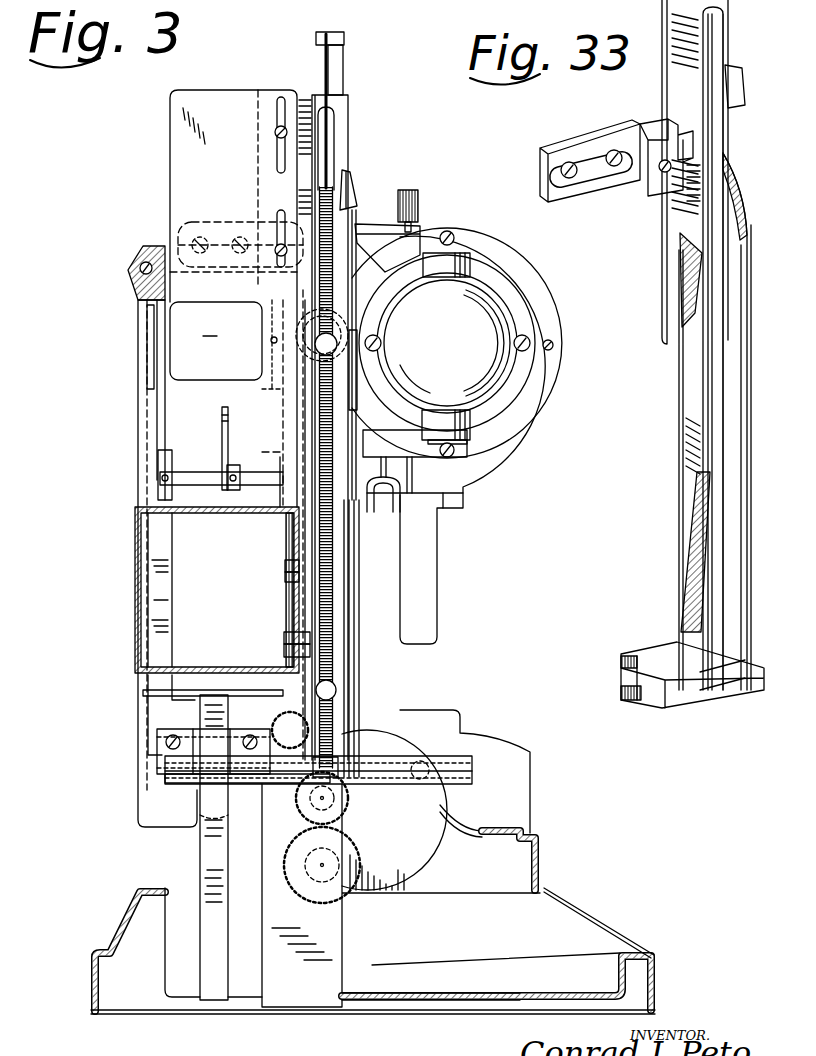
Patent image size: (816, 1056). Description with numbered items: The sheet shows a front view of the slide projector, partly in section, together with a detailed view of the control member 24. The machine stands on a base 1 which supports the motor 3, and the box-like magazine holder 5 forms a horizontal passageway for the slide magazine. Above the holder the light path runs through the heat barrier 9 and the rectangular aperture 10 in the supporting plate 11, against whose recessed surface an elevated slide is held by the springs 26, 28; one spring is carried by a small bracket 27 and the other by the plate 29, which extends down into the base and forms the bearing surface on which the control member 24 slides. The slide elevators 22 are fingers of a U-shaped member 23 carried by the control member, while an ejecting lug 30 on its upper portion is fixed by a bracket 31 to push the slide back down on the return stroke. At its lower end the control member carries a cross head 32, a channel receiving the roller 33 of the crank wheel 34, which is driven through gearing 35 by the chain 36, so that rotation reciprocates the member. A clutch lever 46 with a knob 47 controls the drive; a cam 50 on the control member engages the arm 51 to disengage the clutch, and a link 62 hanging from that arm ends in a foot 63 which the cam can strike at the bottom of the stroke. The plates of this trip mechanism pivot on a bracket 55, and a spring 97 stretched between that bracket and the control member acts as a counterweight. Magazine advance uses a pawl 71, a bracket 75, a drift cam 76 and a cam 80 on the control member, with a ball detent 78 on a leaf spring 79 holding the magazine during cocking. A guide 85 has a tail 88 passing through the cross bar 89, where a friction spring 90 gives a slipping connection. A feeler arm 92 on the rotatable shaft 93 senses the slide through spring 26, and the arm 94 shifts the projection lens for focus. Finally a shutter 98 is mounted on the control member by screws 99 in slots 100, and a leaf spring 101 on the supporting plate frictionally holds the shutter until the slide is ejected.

In FIG. 3, the base 1 is at (92, 967).
In FIG. 3, the motor 3 is at (548, 300).
In FIG. 3, the magazine holder 5 is at (137, 550).
In FIG. 3, the heat barrier 9 is at (210, 326).
In FIG. 3, the rectangular aperture 10 is at (195, 370).
In FIG. 3, the supporting plate 11 is at (140, 412).
In FIG. 3, the slide elevators 22 is at (172, 536).
In FIG. 3, the U-shaped member 23 is at (158, 719).
In FIG. 3, the control member 24 is at (345, 124).
In FIG. 33, the control member 24 is at (679, 395).
In FIG. 3, the spring 26 is at (147, 375).
In FIG. 3, the bracket 27 is at (142, 440).
In FIG. 3, the spring 28 is at (262, 362).
In FIG. 3, the plate 29 is at (288, 320).
In FIG. 3, the ejecting lug 30 is at (178, 215).
In FIG. 33, the ejecting lug 30 is at (553, 135).
In FIG. 33, the bracket 31 is at (644, 187).
In FIG. 3, the cross head 32 is at (475, 762).
In FIG. 33, the cross head 32 is at (643, 650).
In FIG. 3, the roller 33 is at (430, 778).
In FIG. 3, the crank wheel 34 is at (435, 855).
In FIG. 3, the gearing 35 is at (362, 850).
In FIG. 3, the chain 36 is at (355, 632).
In FIG. 3, the clutch lever 46 is at (358, 224).
In FIG. 3, the knob 47 is at (419, 193).
In FIG. 3, the cam 50 is at (350, 190).
In FIG. 33, the cam 50 is at (737, 78).
In FIG. 3, the arm 51 is at (357, 240).
In FIG. 3, the bracket 55 is at (344, 54).
In FIG. 3, the link 62 is at (362, 449).
In FIG. 3, the foot 63 is at (356, 484).
In FIG. 3, the pawl 71 is at (290, 638).
In FIG. 3, the bracket 75 is at (300, 652).
In FIG. 3, the drift cam 76 is at (290, 600).
In FIG. 33, the drift cam 76 is at (687, 551).
In FIG. 3, the ball detent 78 is at (290, 568).
In FIG. 3, the leaf spring 79 is at (290, 582).
In FIG. 3, the cam 80 is at (303, 392).
In FIG. 33, the cam 80 is at (684, 293).
In FIG. 3, the guide 85 is at (143, 694).
In FIG. 3, the tail 88 is at (210, 855).
In FIG. 3, the cross bar 89 is at (178, 784).
In FIG. 3, the friction spring 90 is at (197, 761).
In FIG. 3, the feeler arm 92 is at (158, 338).
In FIG. 3, the rotatable shaft 93 is at (207, 446).
In FIG. 3, the arm 94 is at (230, 446).
In FIG. 3, the spring 97 is at (325, 592).
In FIG. 3, the shutter 98 is at (183, 152).
In FIG. 3, the screws 99 is at (275, 132).
In FIG. 3, the slots 100 is at (272, 158).
In FIG. 3, the leaf spring 101 is at (140, 285).